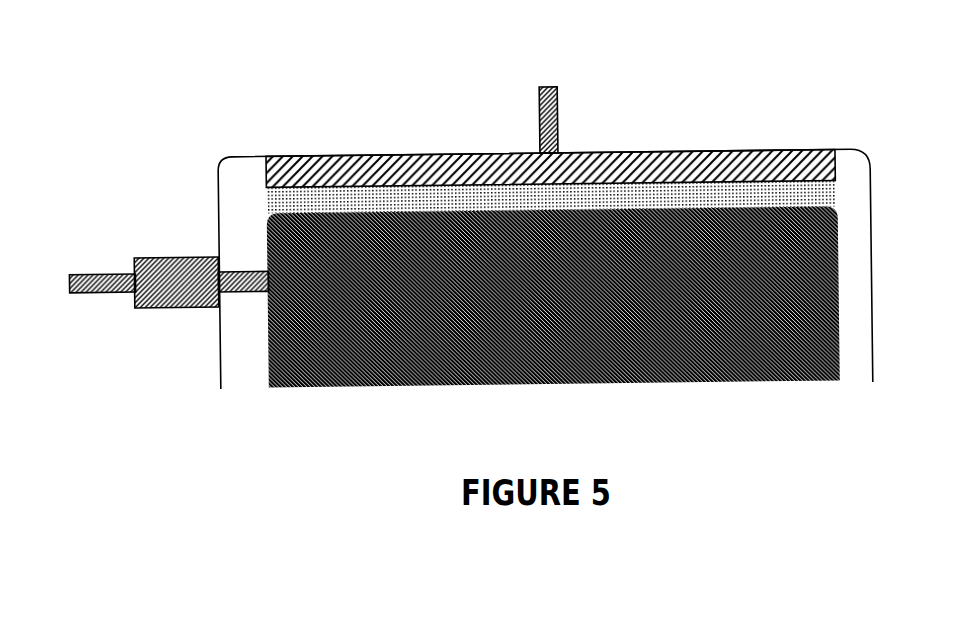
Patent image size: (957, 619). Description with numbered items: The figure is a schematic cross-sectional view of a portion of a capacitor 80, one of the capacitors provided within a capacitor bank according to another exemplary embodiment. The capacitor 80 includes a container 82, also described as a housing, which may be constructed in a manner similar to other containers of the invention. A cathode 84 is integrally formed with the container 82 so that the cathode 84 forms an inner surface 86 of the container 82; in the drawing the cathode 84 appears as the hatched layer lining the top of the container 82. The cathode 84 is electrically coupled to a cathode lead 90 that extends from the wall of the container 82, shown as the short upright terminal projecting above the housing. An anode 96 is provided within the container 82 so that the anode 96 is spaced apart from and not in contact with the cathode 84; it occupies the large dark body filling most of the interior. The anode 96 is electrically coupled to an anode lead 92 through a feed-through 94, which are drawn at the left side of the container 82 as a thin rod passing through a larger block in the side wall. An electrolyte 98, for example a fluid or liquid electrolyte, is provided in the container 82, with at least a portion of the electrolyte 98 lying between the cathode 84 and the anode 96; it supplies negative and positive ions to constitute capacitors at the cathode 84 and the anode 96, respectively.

The capacitor 80 is at (439, 91).
The container 82 is at (248, 156).
The cathode 84 is at (637, 153).
The inner surface 86 is at (224, 376).
The cathode lead 90 is at (558, 110).
The anode lead 92 is at (98, 283).
The feed-through 94 is at (148, 273).
The anode 96 is at (357, 380).
The electrolyte 98 is at (684, 200).